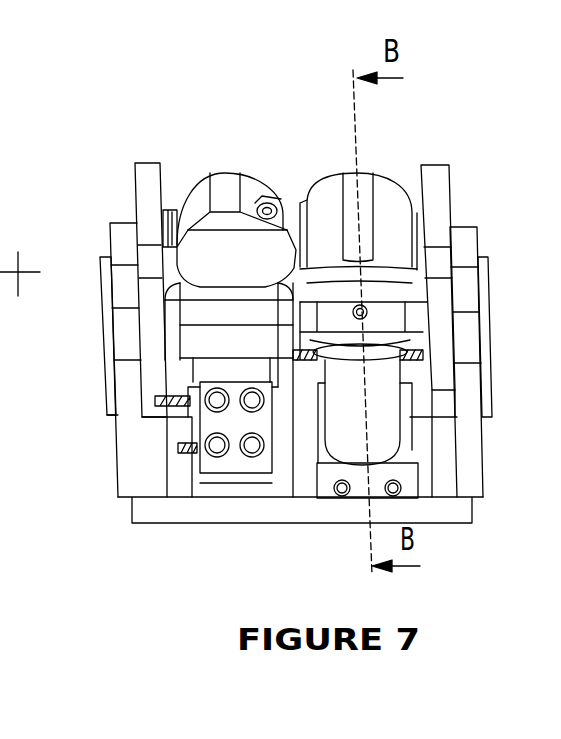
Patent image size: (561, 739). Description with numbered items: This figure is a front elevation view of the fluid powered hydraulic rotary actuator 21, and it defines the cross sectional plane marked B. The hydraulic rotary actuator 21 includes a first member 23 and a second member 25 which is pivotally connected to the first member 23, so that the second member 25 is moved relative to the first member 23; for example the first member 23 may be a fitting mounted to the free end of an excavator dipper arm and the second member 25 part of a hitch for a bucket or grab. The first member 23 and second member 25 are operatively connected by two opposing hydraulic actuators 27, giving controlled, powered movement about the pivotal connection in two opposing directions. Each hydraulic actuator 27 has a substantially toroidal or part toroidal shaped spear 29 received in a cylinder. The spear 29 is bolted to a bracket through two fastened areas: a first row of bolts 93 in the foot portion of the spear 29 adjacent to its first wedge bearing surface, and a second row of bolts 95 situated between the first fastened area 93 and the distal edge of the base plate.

The hydraulic rotary actuator 21 is at (105, 115).
The first member 23 is at (116, 467).
The second member 25 is at (134, 200).
The hydraulic actuator 27 is at (233, 155).
The spear 29 is at (411, 450).
The first fastened area 93 is at (180, 453).
The second fastened area 95 is at (157, 400).